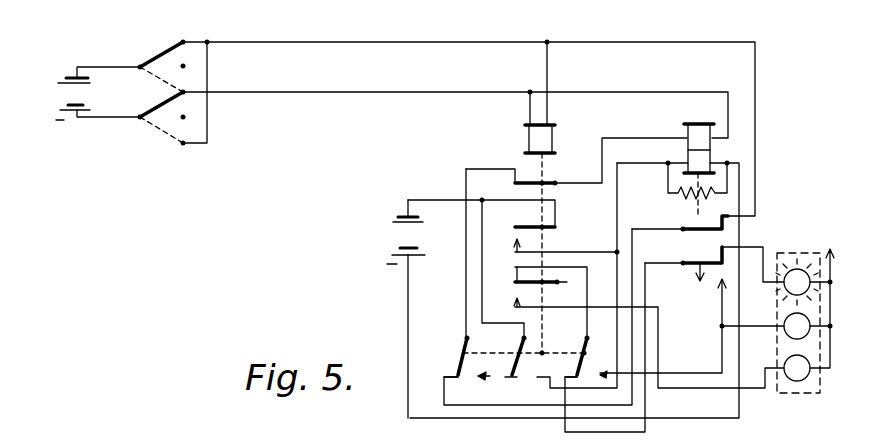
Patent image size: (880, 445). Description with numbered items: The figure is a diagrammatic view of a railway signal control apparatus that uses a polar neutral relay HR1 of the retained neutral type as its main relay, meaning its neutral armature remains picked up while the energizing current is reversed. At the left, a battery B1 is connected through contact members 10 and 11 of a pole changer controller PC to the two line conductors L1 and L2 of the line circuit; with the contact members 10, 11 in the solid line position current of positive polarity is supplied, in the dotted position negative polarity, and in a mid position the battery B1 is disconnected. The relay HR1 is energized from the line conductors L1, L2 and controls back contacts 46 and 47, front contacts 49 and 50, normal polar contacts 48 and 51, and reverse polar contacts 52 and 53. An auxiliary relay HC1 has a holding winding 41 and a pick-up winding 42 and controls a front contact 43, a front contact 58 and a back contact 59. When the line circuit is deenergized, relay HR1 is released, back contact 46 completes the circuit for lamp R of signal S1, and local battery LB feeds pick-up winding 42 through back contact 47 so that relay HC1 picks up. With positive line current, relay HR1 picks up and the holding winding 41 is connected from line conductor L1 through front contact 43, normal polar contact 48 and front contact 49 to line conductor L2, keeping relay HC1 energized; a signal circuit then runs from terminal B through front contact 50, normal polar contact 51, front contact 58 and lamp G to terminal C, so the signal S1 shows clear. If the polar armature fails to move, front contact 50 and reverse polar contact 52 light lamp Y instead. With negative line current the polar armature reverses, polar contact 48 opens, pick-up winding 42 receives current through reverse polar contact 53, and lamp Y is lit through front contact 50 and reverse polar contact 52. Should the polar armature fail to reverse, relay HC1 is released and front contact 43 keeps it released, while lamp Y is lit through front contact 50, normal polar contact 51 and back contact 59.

The contact member 10 is at (157, 53).
The contact member 11 is at (160, 105).
The holding winding 41 is at (687, 131).
The pick-up winding 42 is at (687, 155).
The front contact 43 is at (722, 222).
The back contact 46 is at (635, 341).
The back contact 47 is at (555, 275).
The normal polar contact 48 is at (457, 376).
The front contact 49 is at (511, 183).
The front contact 50 is at (537, 299).
The normal polar contact 51 is at (572, 368).
The reverse polar contact 52 is at (601, 374).
The reverse polar contact 53 is at (540, 382).
The front contact 58 is at (720, 253).
The back contact 59 is at (718, 280).
The pole changer controller PC is at (150, 77).
The battery B1 is at (74, 98).
The line conductor L1 is at (354, 36).
The line conductor L2 is at (354, 86).
The polar neutral relay HR1 is at (530, 137).
The auxiliary relay HC1 is at (699, 124).
The local battery LB is at (400, 238).
The terminal B is at (575, 285).
The signal S1 is at (808, 253).
The terminal C is at (827, 240).